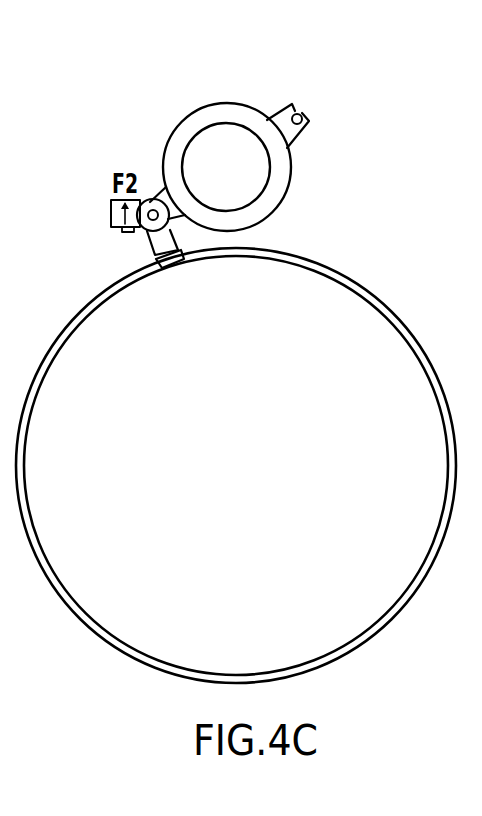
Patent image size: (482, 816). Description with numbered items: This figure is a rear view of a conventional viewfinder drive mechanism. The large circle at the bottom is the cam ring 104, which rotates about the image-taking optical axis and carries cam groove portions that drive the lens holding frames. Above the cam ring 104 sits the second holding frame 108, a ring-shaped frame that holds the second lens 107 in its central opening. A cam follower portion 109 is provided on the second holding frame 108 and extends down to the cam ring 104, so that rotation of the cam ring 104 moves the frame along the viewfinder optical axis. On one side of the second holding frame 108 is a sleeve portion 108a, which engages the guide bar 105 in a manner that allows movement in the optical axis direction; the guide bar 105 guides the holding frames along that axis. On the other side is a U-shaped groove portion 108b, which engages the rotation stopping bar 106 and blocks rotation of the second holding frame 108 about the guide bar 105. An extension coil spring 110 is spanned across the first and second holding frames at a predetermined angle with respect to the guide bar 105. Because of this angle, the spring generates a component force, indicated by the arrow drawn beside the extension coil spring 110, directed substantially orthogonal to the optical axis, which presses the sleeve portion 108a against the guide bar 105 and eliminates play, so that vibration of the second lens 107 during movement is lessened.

The cam ring 104 is at (366, 288).
The guide bar 105 is at (152, 200).
The rotation stopping bar 106 is at (303, 117).
The second lens 107 is at (212, 135).
The second holding frame 108 is at (231, 101).
The sleeve portion 108a is at (164, 190).
The U-shaped groove portion 108b is at (293, 105).
The cam follower portion 109 is at (150, 243).
The extension coil spring 110 is at (112, 230).